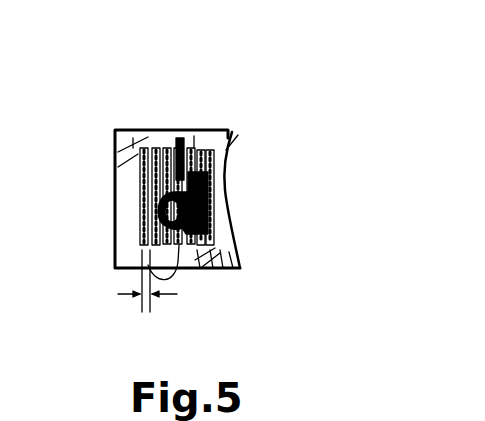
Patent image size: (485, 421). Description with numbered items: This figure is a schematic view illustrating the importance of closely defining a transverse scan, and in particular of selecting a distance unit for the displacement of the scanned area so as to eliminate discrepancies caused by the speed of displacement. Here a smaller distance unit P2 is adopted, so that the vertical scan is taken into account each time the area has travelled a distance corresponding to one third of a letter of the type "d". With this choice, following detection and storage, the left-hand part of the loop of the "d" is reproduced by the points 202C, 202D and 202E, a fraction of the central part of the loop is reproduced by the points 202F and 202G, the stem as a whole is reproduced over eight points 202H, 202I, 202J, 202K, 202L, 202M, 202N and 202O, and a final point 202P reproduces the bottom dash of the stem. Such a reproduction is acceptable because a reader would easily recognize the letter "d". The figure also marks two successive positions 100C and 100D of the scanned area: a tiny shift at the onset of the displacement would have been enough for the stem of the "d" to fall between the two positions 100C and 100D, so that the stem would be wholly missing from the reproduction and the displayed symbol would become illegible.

The position of the area 100C is at (133, 138).
The position of the area 100D is at (194, 136).
The point 202C is at (116, 143).
The point 202D is at (142, 228).
The point 202E is at (140, 227).
The point 202F is at (178, 142).
The point 202G is at (142, 246).
The point 202H is at (183, 138).
The point 202I is at (214, 175).
The point 202J is at (238, 135).
The point 202K is at (232, 132).
The point 202L is at (233, 268).
The point 202M is at (213, 268).
The point 202N is at (223, 268).
The point 202O is at (141, 283).
The point 202P is at (200, 268).
The distance unit P2 is at (140, 313).